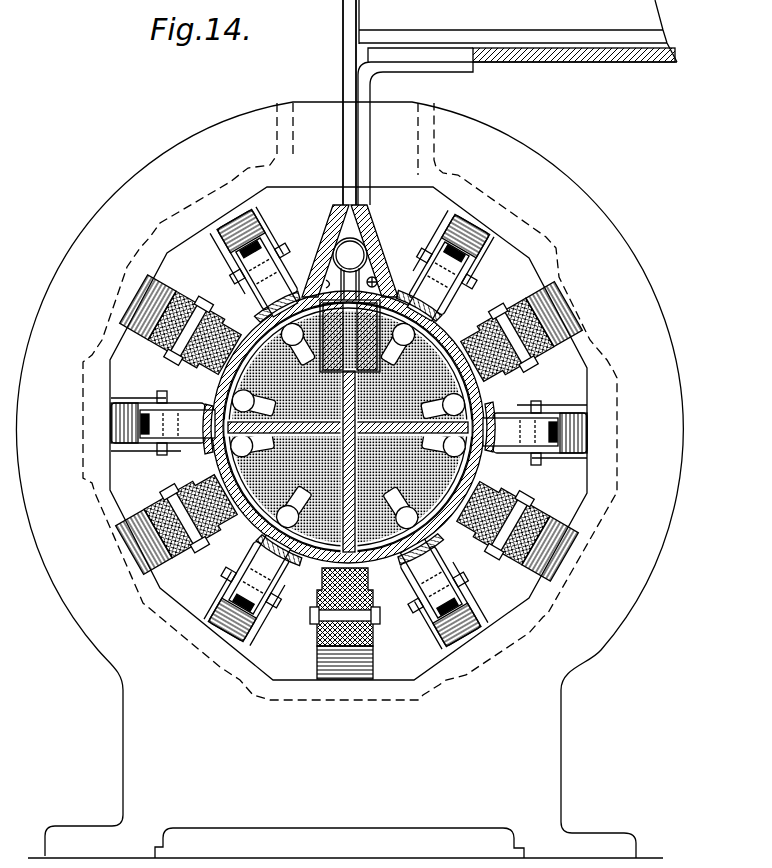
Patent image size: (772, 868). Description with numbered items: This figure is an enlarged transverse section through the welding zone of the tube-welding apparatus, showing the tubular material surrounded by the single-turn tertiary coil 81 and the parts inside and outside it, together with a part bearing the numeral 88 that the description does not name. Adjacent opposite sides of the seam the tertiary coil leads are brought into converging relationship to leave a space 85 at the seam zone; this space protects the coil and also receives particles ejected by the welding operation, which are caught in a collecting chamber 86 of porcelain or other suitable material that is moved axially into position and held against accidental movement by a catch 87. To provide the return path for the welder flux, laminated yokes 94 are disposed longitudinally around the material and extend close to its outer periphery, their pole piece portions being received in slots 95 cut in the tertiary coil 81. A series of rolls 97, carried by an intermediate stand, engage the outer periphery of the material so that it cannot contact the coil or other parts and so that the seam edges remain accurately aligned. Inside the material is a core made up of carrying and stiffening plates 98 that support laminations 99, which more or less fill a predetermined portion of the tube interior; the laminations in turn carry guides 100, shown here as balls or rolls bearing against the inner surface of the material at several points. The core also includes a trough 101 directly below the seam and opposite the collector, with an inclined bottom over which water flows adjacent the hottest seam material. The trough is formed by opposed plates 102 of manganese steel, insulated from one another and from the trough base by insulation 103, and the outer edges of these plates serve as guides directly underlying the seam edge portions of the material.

The tertiary coil 81 is at (490, 459).
The space 85 is at (364, 222).
The collecting chamber 86 is at (368, 251).
The catch 87 is at (378, 282).
The shaft 88 is at (343, 81).
The laminated yokes 94 is at (177, 315).
The slots 95 is at (212, 453).
The rolls 97 is at (265, 250).
The carrying and stiffening plates 98 is at (304, 562).
The laminations 99 is at (240, 518).
The guides 100 is at (220, 399).
The trough 101 is at (377, 296).
The opposed plates 102 is at (308, 294).
The insulation 103 is at (262, 310).